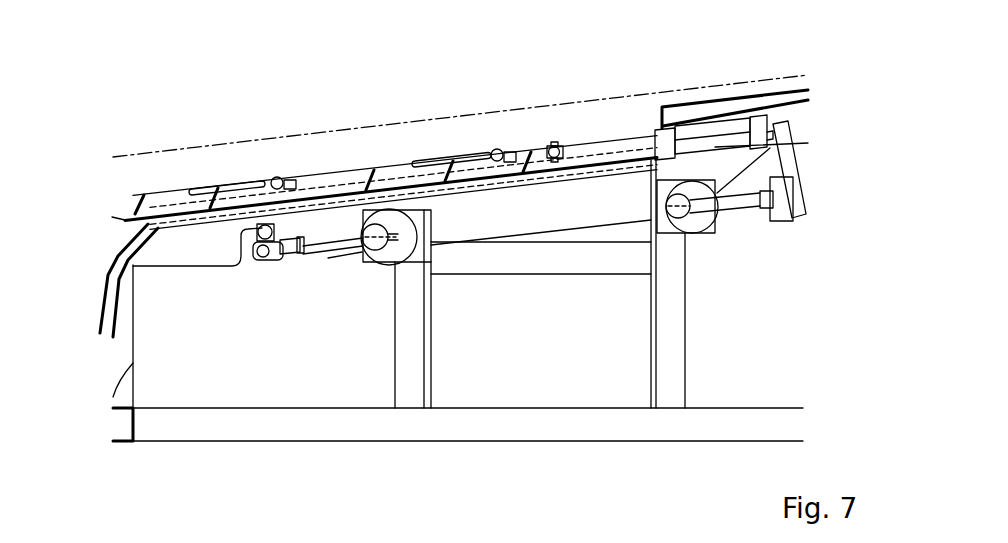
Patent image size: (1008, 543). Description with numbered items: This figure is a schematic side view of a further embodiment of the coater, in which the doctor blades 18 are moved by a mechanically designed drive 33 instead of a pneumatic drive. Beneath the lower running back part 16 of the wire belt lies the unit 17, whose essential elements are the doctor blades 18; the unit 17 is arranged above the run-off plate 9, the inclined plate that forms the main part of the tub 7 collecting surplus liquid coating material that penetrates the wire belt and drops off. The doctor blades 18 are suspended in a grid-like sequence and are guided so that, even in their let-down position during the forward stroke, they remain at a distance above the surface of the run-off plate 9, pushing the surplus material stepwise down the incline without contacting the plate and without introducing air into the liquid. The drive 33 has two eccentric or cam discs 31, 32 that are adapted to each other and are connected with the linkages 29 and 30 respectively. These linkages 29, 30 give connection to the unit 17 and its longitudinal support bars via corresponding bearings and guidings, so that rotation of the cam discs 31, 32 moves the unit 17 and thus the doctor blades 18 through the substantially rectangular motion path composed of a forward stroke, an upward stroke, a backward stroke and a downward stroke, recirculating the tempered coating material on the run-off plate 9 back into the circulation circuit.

The tub 7 is at (178, 230).
The run-off plate 9 is at (177, 218).
The lower running back part of the wire belt 16 is at (680, 92).
The unit 17 is at (347, 165).
The doctor blades 18 is at (398, 176).
The linkage 29 is at (785, 183).
The linkage 30 is at (313, 247).
The eccentric or cam disc 31 is at (712, 253).
The eccentric or cam disc 32 is at (378, 268).
The mechanically designed drive 33 is at (543, 304).